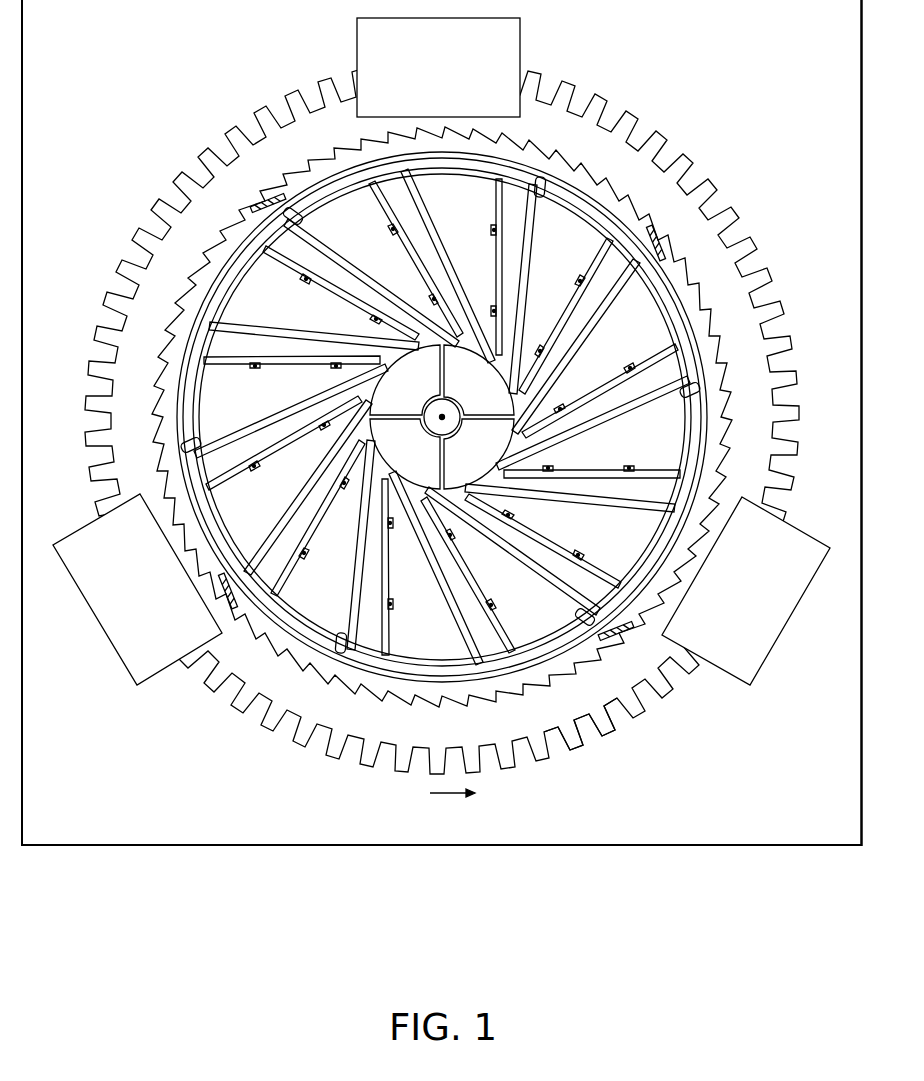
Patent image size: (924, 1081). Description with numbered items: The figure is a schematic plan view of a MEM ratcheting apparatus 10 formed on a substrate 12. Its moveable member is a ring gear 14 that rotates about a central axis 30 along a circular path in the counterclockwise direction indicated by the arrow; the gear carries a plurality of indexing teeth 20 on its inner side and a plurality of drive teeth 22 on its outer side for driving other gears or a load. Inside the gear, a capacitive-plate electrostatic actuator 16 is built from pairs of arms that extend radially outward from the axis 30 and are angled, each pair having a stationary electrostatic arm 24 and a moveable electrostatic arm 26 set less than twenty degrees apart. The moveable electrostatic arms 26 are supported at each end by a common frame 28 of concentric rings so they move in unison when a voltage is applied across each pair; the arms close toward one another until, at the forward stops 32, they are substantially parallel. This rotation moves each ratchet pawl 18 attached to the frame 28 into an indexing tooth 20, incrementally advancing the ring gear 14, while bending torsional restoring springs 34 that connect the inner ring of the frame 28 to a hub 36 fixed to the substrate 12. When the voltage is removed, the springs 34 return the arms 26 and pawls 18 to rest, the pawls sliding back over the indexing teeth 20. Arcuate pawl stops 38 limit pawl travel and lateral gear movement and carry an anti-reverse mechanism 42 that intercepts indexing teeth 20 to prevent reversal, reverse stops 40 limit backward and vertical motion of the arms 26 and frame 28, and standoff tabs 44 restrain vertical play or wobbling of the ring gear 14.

The MEM ratcheting apparatus 10 is at (580, 882).
The substrate 12 is at (76, 810).
The ring gear 14 is at (432, 736).
The capacitive-plate electrostatic actuator 16 is at (442, 417).
The ratchet pawls 18 is at (170, 350).
The indexing teeth 20 is at (159, 387).
The drive teeth 22 is at (615, 727).
The stationary electrostatic arm 24 is at (337, 294).
The moveable electrostatic arm 26 is at (267, 330).
The common frame 28 is at (216, 515).
The central axis 30 is at (444, 416).
The forward stops 32 is at (255, 357).
The torsional restoring springs 34 is at (437, 370).
The hub 36 is at (455, 431).
The arcuate pawl stops 38 is at (170, 457).
The reverse stops 40 is at (302, 218).
The anti-reverse mechanism 42 is at (263, 203).
The standoff tabs 44 is at (423, 75).